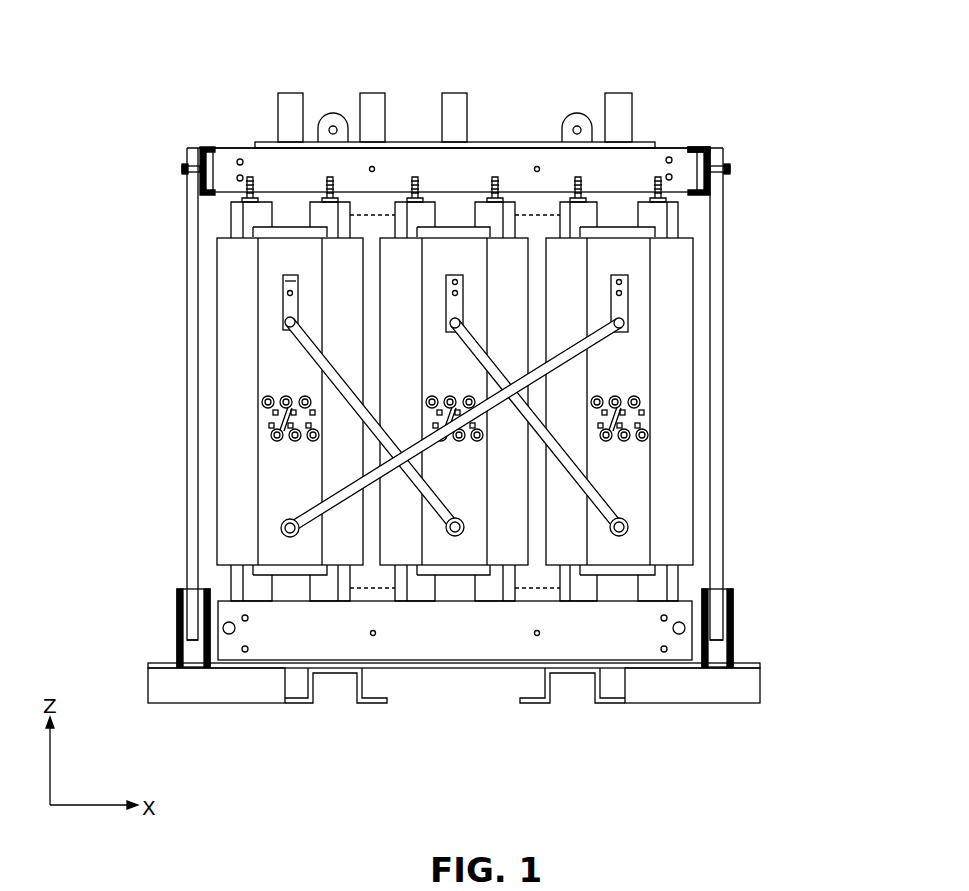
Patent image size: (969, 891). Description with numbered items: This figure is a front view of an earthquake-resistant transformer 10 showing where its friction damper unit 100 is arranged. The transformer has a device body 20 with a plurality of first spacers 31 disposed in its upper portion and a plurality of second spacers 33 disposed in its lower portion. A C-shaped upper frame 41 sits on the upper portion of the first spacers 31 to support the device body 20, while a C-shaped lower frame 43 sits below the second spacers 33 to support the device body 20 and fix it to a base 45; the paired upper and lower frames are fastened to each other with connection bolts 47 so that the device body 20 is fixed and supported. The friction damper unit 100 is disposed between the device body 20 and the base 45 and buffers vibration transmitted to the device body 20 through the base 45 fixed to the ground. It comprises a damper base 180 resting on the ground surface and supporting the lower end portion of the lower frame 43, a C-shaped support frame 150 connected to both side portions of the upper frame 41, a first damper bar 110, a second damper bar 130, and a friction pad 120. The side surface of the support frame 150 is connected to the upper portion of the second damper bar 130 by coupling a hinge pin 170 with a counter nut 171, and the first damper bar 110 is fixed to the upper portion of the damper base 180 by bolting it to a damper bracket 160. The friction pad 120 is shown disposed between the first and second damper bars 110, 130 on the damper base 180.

The earthquake-resistant transformer 10 is at (152, 48).
The device body 20 is at (233, 282).
The first spacer 31 is at (252, 215).
The second spacer 33 is at (250, 580).
The upper frame 41 is at (250, 158).
The lower frame 43 is at (285, 632).
The base 45 is at (362, 685).
The connection bolt 47 is at (240, 160).
The friction damper unit 100 is at (733, 450).
The first damper bar 110 is at (735, 623).
The friction pad 120 is at (733, 590).
The second damper bar 130 is at (723, 537).
The support frame 150 is at (707, 160).
The damper bracket 160 is at (735, 658).
The hinge pin 170 is at (733, 169).
The counter nut 171 is at (690, 148).
The damper base 180 is at (690, 690).